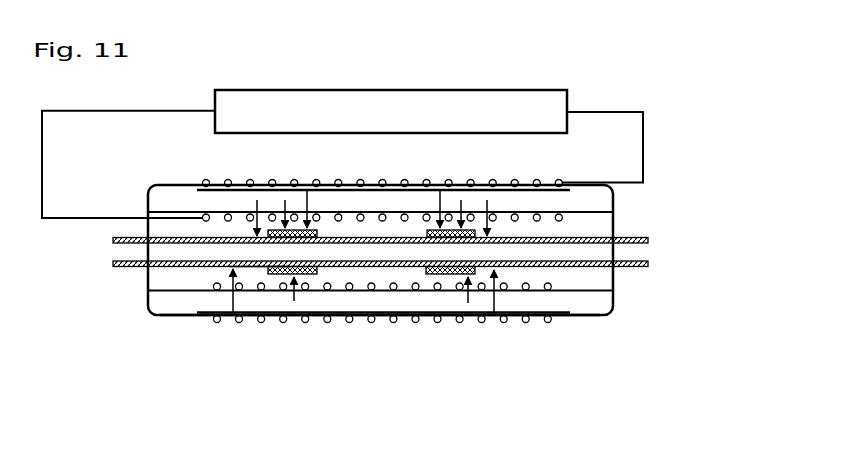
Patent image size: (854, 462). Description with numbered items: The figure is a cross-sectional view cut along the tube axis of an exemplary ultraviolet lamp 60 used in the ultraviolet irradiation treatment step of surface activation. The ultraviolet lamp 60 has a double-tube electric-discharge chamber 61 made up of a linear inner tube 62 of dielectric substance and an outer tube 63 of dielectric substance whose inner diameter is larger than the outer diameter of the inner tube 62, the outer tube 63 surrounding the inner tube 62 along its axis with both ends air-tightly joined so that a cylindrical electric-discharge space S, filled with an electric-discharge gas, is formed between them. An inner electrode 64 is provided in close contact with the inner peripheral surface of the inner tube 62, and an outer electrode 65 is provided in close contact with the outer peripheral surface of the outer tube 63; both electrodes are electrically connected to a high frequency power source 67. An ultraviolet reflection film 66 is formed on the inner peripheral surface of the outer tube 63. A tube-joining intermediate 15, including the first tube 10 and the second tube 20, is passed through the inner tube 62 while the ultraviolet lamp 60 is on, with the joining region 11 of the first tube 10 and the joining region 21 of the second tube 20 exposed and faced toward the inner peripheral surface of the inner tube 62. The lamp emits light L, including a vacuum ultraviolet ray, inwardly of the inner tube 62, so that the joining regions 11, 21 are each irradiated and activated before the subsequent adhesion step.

The first tube 10 is at (371, 325).
The joining region 11 is at (450, 275).
The tube-joining intermediate 15 is at (399, 300).
The second tube 20 is at (190, 268).
The joining region 21 is at (255, 268).
The ultraviolet lamp 60 is at (426, 292).
The electric-discharge chamber 61 is at (614, 205).
The inner tube 62 is at (362, 293).
The outer tube 63 is at (490, 321).
The inner electrode 64 is at (338, 293).
The outer electrode 65 is at (440, 321).
The ultraviolet reflection film 66 is at (293, 318).
The high frequency power source 67 is at (567, 98).
The light L is at (282, 208).
The electric-discharge space S is at (513, 303).